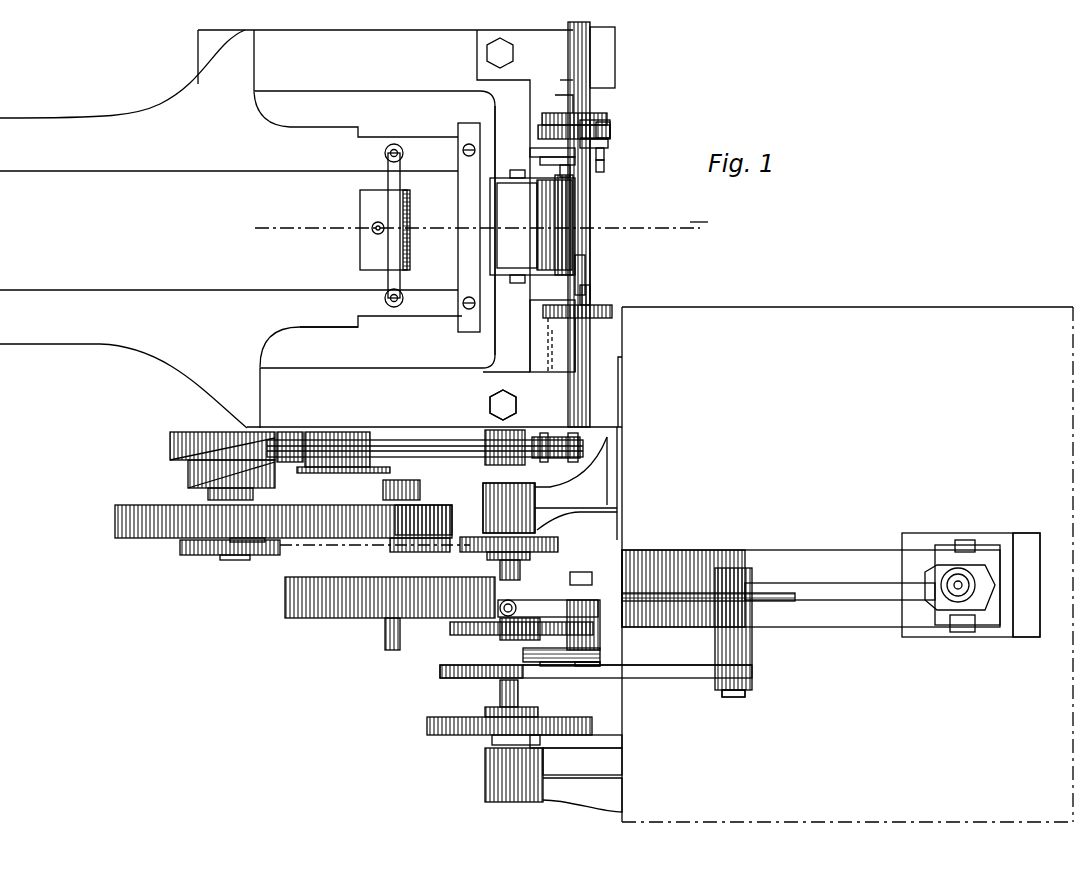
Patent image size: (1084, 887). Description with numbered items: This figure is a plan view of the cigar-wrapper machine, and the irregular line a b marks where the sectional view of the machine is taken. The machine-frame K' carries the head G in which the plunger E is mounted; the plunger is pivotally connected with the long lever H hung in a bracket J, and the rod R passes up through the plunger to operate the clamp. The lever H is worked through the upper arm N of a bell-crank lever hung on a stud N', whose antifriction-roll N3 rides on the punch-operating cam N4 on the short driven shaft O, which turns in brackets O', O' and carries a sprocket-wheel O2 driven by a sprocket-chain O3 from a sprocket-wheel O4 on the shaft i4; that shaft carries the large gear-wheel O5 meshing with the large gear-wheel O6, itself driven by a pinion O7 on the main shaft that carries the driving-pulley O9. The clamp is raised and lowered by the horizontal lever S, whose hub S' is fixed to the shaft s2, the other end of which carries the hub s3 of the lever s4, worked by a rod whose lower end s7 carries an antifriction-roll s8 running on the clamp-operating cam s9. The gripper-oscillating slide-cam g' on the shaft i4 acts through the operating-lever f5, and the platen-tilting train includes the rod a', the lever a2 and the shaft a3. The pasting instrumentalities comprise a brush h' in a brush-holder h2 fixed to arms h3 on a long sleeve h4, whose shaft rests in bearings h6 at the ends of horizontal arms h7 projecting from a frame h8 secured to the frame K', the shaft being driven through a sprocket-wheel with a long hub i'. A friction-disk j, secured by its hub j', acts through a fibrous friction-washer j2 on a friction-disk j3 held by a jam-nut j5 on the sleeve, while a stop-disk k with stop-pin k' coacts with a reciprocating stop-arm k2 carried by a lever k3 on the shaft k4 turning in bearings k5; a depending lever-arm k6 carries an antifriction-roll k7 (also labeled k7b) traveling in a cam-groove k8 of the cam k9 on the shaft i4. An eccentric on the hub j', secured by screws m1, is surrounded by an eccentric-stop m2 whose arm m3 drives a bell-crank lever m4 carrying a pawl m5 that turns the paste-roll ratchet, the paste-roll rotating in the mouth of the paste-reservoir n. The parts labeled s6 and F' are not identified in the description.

The irregular line a is at (469, 229).
The irregular line b is at (705, 223).
The paste-reservoir n is at (532, 226).
The brush h' is at (587, 224).
The brush-holder h2 is at (591, 236).
The arms h3 is at (585, 270).
The long sleeve h4 is at (590, 295).
The bearings h6 is at (615, 70).
The horizontal arms h7 is at (545, 82).
The frame h8 is at (505, 226).
The friction-disk j is at (617, 126).
The hub j' is at (580, 109).
The fibrous friction-washer j2 is at (632, 132).
The friction-disk j3 is at (604, 152).
The jam-nut j5 is at (602, 166).
The long hub i' is at (583, 178).
The screws m1 is at (540, 158).
The eccentric-stop m2 is at (610, 120).
The arm m3 is at (578, 113).
The bell-crank lever m4 is at (604, 144).
The pawl m5 is at (532, 148).
The stop-disk k is at (599, 301).
The stop-pin k' is at (539, 336).
The reciprocating stop-arm k2 is at (514, 405).
The lever k3 is at (575, 462).
The horizontal shaft k4 is at (445, 440).
The bearings k5 is at (352, 432).
The depending lever-arm k6 is at (556, 358).
The antifriction-roll k7 is at (285, 432).
The antifriction-roll k7b is at (540, 347).
The cam-groove k8 is at (188, 470).
The cam k9 is at (170, 438).
The machine-frame K' is at (361, 360).
The rod a' is at (429, 502).
The lever a2 is at (395, 480).
The shaft a3 is at (343, 476).
The short horizontal driven shaft O is at (502, 698).
The brackets O' is at (552, 619).
The sprocket-wheel O2 is at (558, 545).
The sprocket-chain O3 is at (295, 545).
The sprocket-wheel O4 is at (185, 555).
The large gear-wheel O5 is at (115, 530).
The large gear-wheel O6 is at (345, 546).
The pinion O7 is at (497, 508).
The driving-pulley O9 is at (390, 613).
The shaft i4 is at (236, 555).
The upper arm N is at (548, 590).
The stud N' is at (607, 625).
The antifriction-roll N3 is at (531, 634).
The punch-operating cam N4 is at (452, 635).
The long lever H is at (785, 588).
The horizontal lever S is at (840, 581).
The hub S' is at (716, 632).
The bracket J is at (790, 601).
The shaft s2 is at (735, 697).
The hub s3 is at (752, 672).
The lever s4 is at (650, 678).
The bar s6 is at (600, 655).
The lower end s7 is at (555, 668).
The antifriction-roll s8 is at (590, 668).
The clamp-operating cam s9 is at (455, 678).
The gripper-oscillating slide-cam g' is at (509, 736).
The operating-lever f5 is at (592, 745).
The head G is at (980, 555).
The rod R is at (935, 598).
The plunger E is at (970, 632).
The plate F' is at (1020, 585).